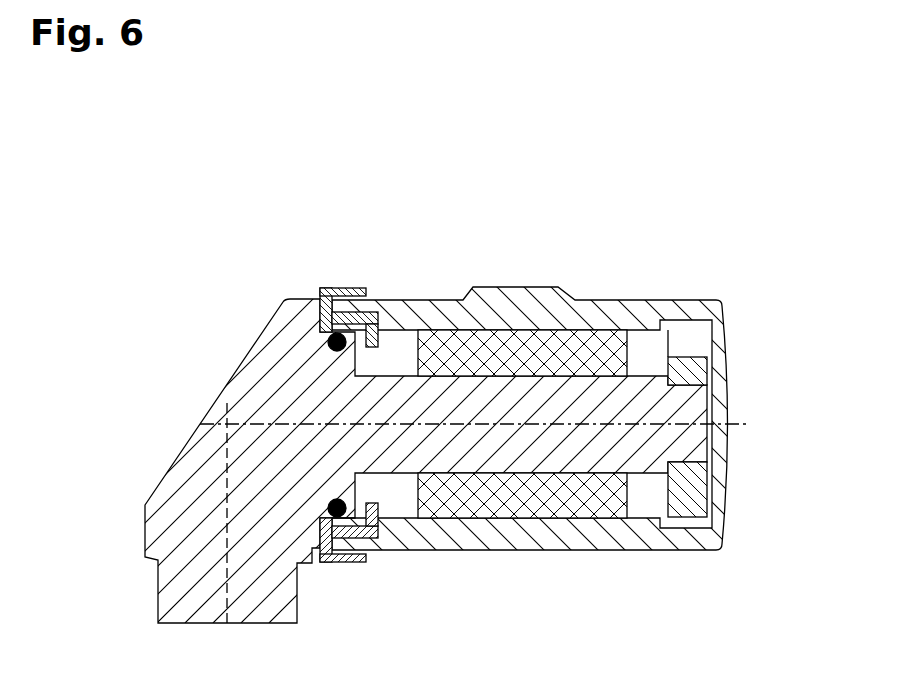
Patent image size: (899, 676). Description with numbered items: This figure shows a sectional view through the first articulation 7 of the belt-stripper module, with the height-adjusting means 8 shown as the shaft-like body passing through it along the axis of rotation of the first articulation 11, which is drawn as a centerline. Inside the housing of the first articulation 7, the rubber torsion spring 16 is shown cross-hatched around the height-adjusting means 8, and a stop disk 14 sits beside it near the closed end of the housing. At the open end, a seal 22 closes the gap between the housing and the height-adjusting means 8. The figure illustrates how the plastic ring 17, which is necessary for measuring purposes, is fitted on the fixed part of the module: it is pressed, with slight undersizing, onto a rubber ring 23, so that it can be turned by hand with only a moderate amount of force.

The first articulation 7 is at (535, 300).
The height-adjusting means 8 is at (195, 580).
The axis of rotation of the first articulation 11 is at (750, 424).
The stop disk 14 is at (690, 367).
The rubber torsion spring 16 is at (610, 498).
The plastic ring 17 is at (347, 290).
The seal 22 is at (338, 313).
The rubber ring 23 is at (330, 338).